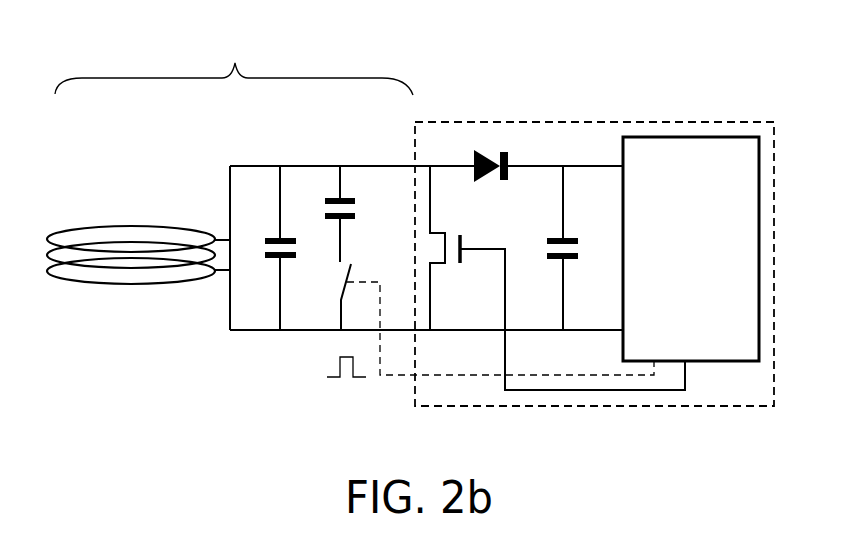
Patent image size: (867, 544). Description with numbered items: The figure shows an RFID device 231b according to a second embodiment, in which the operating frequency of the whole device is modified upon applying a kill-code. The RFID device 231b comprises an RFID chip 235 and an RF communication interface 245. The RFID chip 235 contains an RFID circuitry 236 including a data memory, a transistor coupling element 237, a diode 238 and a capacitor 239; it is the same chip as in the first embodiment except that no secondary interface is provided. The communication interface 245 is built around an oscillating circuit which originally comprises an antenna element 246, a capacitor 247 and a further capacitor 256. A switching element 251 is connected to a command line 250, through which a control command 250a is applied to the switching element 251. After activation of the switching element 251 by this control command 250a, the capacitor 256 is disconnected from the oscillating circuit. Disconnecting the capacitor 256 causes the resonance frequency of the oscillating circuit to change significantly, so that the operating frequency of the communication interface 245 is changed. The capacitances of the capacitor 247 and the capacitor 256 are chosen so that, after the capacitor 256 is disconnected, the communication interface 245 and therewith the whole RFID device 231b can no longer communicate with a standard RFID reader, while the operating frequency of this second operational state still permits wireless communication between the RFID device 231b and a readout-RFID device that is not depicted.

The communication interface 245 is at (234, 66).
The antenna element 246 is at (148, 226).
The capacitor 247 is at (270, 260).
The capacitor 256 is at (333, 197).
The switching element 251 is at (352, 267).
The command line 250 is at (395, 377).
The control command 250a is at (330, 363).
The RFID chip 235 is at (612, 122).
The RFID device 231b is at (693, 72).
The RFID circuitry 236 is at (703, 244).
The transistor coupling element 237 is at (467, 240).
The diode 238 is at (488, 157).
The capacitor 239 is at (570, 263).